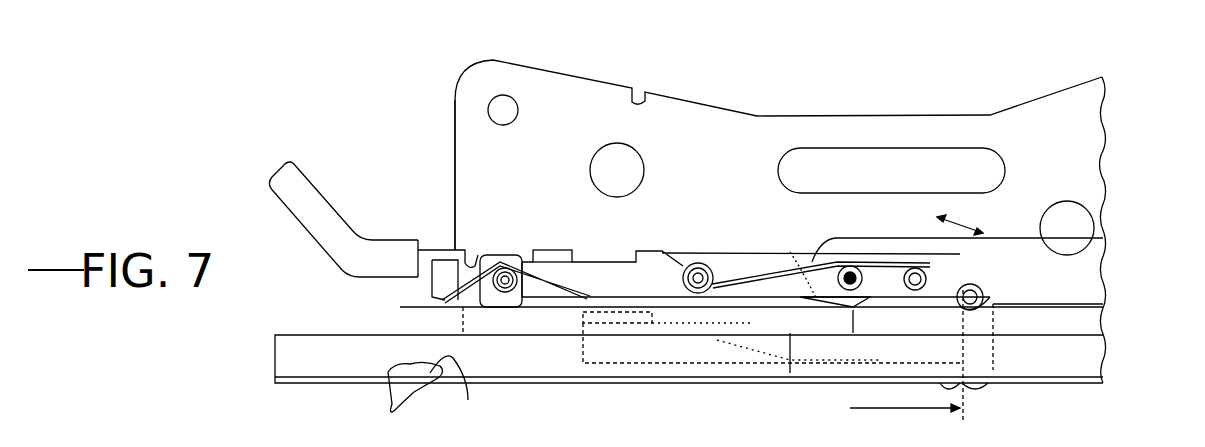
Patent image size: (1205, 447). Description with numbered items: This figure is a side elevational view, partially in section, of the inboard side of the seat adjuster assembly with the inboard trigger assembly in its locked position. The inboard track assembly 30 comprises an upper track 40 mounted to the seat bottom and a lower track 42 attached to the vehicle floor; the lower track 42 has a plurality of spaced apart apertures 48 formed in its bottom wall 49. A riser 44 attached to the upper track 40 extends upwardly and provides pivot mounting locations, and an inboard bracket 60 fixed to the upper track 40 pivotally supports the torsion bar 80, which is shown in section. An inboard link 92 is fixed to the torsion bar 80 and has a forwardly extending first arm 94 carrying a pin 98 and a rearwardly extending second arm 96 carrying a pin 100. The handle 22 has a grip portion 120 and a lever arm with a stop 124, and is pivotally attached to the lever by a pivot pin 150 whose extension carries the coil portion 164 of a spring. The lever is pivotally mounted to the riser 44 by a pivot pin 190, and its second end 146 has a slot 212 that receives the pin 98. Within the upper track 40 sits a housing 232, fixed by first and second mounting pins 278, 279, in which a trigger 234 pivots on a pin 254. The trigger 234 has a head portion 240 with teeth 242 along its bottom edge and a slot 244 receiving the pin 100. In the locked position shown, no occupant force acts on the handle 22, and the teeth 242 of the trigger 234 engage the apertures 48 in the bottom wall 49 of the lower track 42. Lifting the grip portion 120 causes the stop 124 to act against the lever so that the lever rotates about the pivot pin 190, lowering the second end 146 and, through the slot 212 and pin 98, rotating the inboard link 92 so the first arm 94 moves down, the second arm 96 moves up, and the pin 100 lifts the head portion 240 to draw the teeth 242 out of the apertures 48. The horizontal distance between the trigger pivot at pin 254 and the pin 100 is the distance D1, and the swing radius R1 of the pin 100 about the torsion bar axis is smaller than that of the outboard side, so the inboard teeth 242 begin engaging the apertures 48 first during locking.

The handle 22 is at (305, 170).
The inboard track assembly 30 is at (907, 102).
The upper track 40 is at (482, 323).
The lower track 42 is at (335, 334).
The riser 44 is at (582, 93).
The apertures 48 is at (410, 400).
The bottom wall 49 is at (458, 392).
The inboard bracket 60 is at (927, 262).
The torsion bar 80 is at (906, 268).
The inboard link 92 is at (890, 252).
The first arm 94 is at (790, 252).
The second arm 96 is at (920, 345).
The pin 98 is at (823, 377).
The pin 100 is at (960, 307).
The grip portion 120 is at (322, 247).
The stop 124 is at (560, 250).
The second end 146 is at (818, 258).
The pivot pin 150 is at (486, 255).
The coil portion 164 is at (520, 310).
The pivot pin 190 is at (698, 262).
The slot 212 is at (857, 250).
The housing 232 is at (633, 368).
The trigger 234 is at (853, 310).
The head portion 240 is at (983, 287).
The teeth 242 is at (983, 387).
The slot 244 is at (995, 305).
The pin 254 is at (790, 373).
The first mounting pin 278 is at (645, 340).
The second mounting pin 279 is at (760, 328).
The swing radius R1 is at (967, 220).
The distance D1 is at (878, 412).